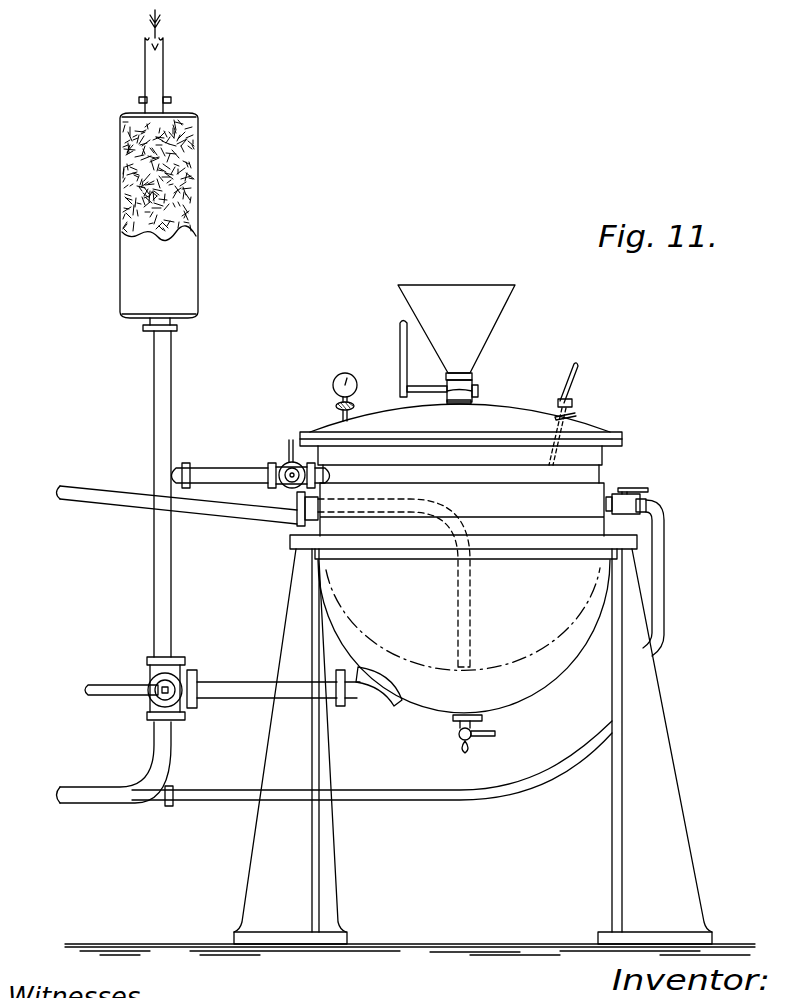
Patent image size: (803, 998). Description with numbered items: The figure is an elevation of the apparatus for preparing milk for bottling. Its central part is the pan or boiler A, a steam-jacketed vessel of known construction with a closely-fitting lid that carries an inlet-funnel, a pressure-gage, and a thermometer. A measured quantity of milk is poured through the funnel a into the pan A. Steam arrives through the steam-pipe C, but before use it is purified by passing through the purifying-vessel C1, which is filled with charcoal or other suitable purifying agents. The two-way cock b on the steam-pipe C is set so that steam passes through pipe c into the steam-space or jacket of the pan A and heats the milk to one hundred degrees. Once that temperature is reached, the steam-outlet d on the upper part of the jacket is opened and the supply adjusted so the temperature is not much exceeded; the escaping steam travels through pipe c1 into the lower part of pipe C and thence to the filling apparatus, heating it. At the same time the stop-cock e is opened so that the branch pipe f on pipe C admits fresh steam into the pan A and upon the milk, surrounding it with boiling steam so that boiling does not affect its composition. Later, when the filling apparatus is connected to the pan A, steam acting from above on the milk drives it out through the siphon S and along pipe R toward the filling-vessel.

The purifying-vessel C1 is at (182, 270).
The steam-pipe C is at (170, 386).
The two-way cock b is at (178, 672).
The pipe c is at (235, 690).
The pipe R is at (85, 500).
The branch pipe f is at (212, 470).
The stop-cock e is at (286, 463).
The funnel a is at (478, 349).
The siphon S is at (478, 610).
The steam-outlet d is at (626, 492).
The pipe c1 is at (206, 812).
The pan or boiler A is at (410, 745).